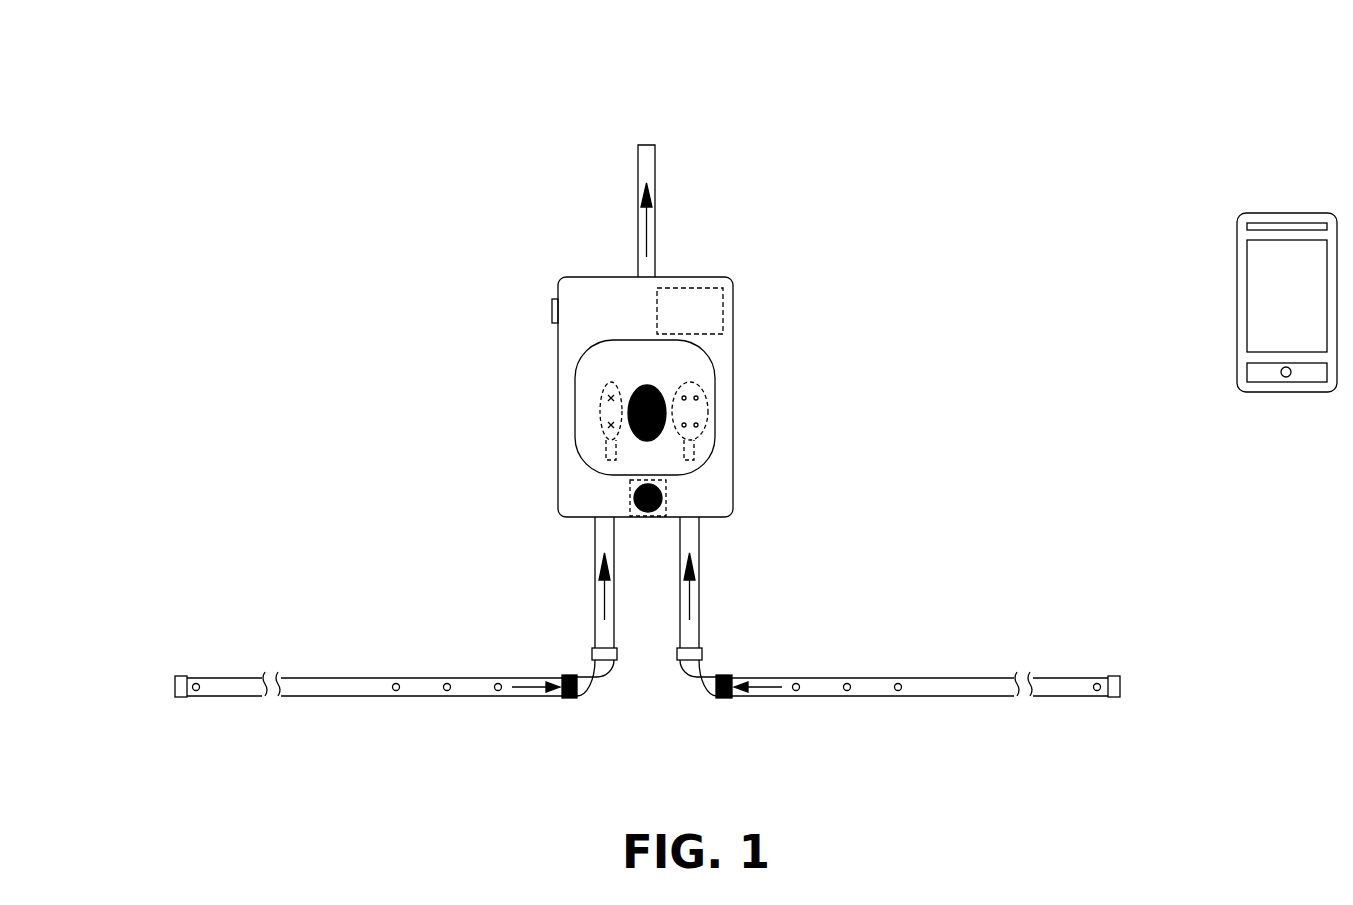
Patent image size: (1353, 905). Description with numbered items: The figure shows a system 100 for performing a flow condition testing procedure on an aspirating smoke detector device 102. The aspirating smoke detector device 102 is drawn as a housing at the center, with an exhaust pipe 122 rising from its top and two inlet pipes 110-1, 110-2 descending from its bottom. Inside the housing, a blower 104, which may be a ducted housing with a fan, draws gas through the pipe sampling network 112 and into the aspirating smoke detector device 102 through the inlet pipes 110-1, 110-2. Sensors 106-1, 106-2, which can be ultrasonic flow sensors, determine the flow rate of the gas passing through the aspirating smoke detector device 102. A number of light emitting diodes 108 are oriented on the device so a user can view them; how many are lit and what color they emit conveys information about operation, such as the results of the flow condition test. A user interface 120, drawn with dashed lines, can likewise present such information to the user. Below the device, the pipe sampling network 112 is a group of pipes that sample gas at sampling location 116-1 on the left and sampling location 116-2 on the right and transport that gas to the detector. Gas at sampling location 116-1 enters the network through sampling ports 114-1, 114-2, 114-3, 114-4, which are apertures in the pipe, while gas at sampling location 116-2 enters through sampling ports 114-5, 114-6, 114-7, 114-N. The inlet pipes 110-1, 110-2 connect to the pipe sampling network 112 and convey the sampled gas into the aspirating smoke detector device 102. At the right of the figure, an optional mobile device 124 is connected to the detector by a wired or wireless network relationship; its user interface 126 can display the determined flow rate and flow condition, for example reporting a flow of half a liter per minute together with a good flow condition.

The system 100 is at (243, 102).
The aspirating smoke detector device 102 is at (558, 350).
The blower 104 is at (630, 497).
The sensor 106-1 is at (606, 455).
The sensor 106-2 is at (694, 456).
The light emitting diodes 108 is at (552, 311).
The inlet pipe 110-1 is at (595, 552).
The inlet pipe 110-2 is at (699, 548).
The pipe sampling network 112 is at (152, 614).
The sampling port 114-1 is at (196, 683).
The sampling port 114-2 is at (396, 683).
The sampling port 114-3 is at (447, 683).
The sampling port 114-4 is at (498, 683).
The sampling port 114-5 is at (796, 683).
The sampling port 114-6 is at (847, 683).
The sampling port 114-7 is at (898, 683).
The sampling port 114-N is at (1097, 683).
The sampling location 116-1 is at (388, 753).
The sampling location 116-2 is at (837, 753).
The user interface 120 is at (723, 310).
The exhaust pipe 122 is at (656, 180).
The mobile device 124 is at (1237, 230).
The user interface 126 is at (1265, 322).